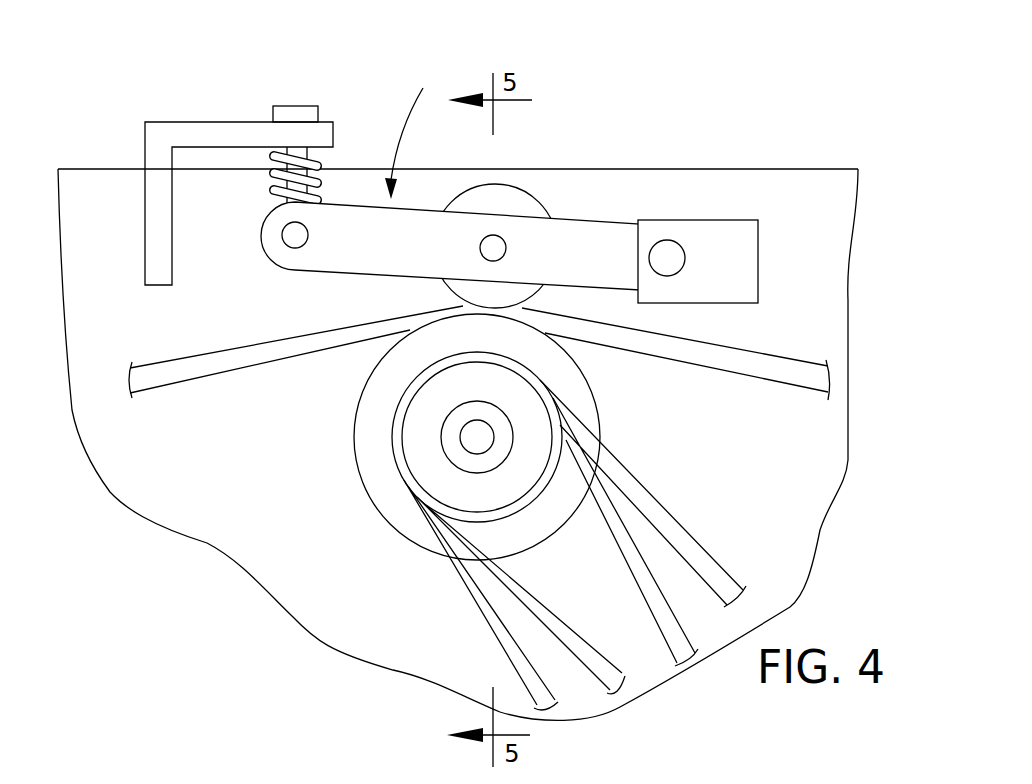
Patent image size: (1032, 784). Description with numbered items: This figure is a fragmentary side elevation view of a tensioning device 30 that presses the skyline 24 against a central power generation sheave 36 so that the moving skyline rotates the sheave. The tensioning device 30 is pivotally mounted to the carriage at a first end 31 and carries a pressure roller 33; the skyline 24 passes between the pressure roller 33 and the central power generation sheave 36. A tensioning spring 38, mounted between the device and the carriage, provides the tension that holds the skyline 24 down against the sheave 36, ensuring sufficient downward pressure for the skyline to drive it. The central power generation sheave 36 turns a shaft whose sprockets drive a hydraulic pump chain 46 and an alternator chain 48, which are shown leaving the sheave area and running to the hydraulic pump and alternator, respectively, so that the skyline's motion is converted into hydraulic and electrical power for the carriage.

The skyline 24 is at (213, 353).
The tensioning device 30 is at (562, 120).
The first end 31 is at (577, 232).
The pressure roller 33 is at (490, 186).
The central power generation sheave 36 is at (375, 483).
The tensioning spring 38 is at (270, 168).
The hydraulic pump chain 46 is at (485, 625).
The alternator chain 48 is at (680, 522).